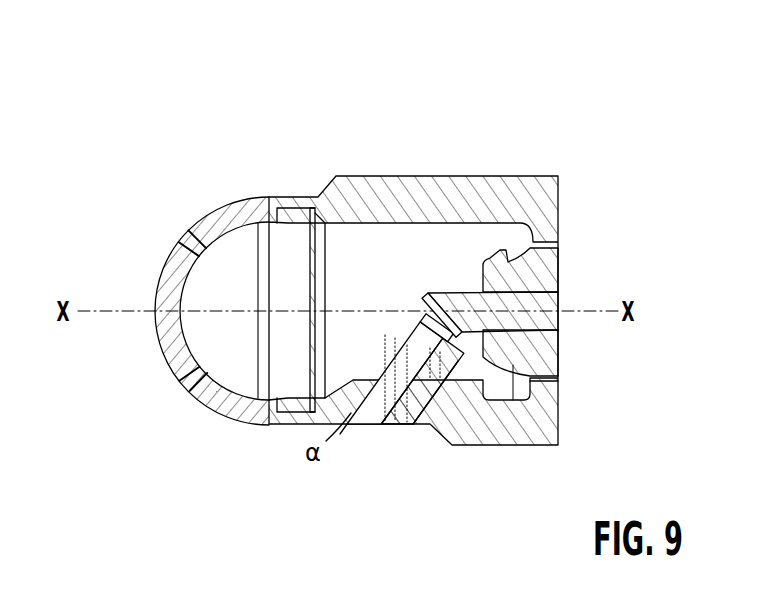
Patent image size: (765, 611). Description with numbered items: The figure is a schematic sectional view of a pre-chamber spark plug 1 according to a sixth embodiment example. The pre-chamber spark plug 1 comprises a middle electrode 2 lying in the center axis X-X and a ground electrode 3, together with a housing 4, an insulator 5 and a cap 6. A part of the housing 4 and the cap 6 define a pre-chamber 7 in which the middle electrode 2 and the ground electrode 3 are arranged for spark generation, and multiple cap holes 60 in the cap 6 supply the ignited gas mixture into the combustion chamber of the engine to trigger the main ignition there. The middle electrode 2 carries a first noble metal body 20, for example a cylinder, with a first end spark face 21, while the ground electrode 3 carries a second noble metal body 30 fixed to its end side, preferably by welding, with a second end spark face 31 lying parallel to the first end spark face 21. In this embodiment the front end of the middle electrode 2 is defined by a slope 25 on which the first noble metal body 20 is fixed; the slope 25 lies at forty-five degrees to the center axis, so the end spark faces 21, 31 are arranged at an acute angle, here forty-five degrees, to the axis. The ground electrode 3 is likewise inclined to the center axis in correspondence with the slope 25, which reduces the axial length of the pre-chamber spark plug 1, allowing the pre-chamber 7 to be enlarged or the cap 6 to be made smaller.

The pre-chamber spark plug 1 is at (183, 128).
The middle electrode 2 is at (506, 298).
The ground electrode 3 is at (374, 423).
The housing 4 is at (531, 427).
The insulator 5 is at (542, 264).
The cap 6 is at (244, 197).
The pre-chamber 7 is at (239, 375).
The first noble metal body 20 is at (440, 310).
The first end spark face 21 is at (455, 325).
The slope 25 is at (394, 300).
The second noble metal body 30 is at (413, 423).
The second end spark face 31 is at (448, 402).
The cap holes 60 is at (190, 238).